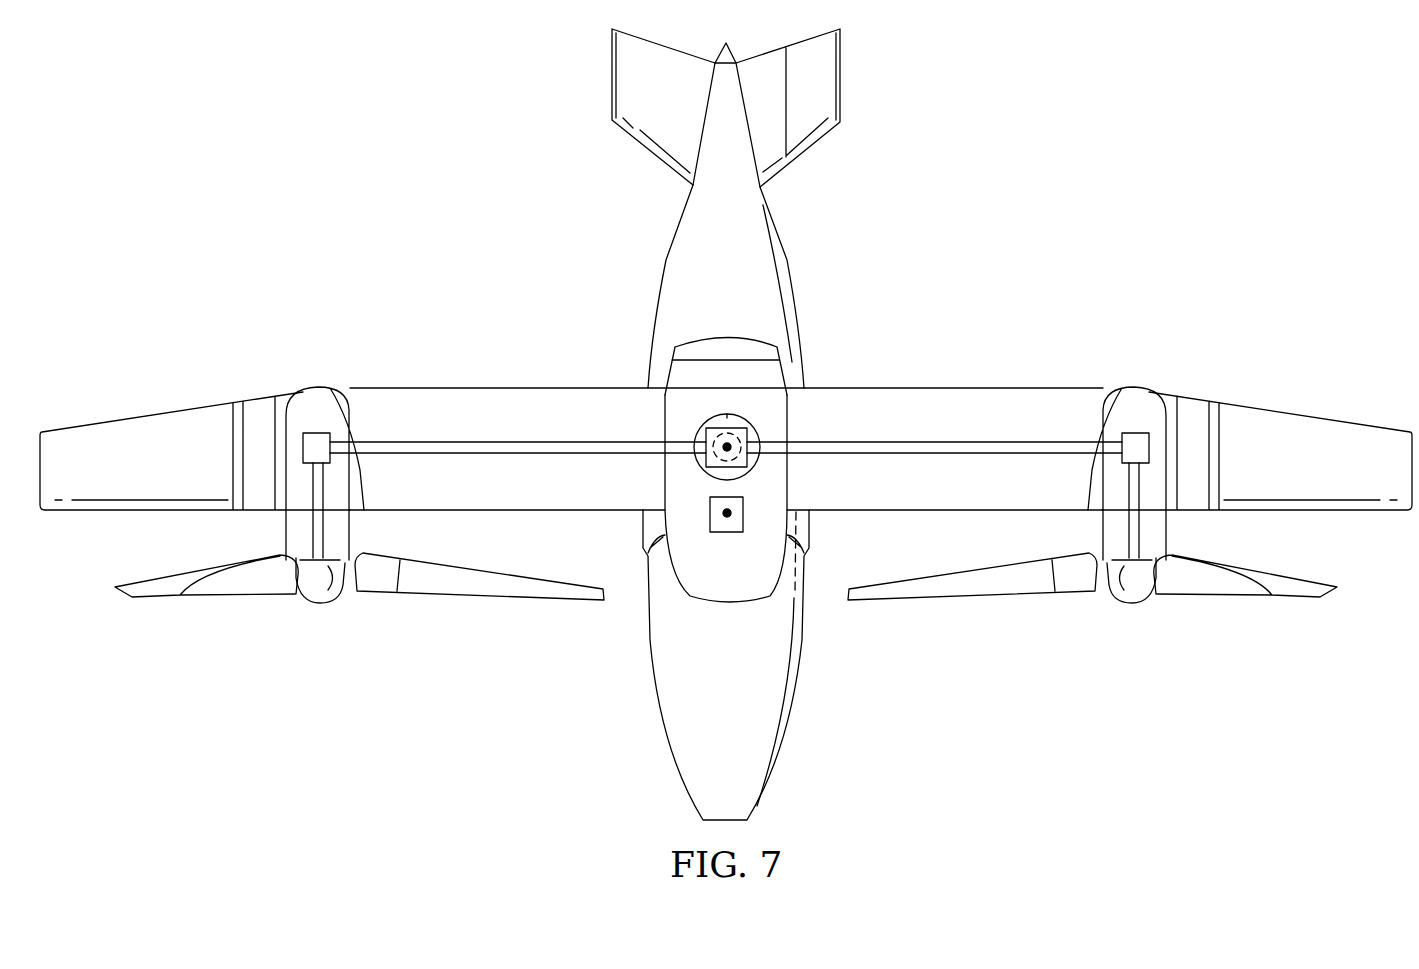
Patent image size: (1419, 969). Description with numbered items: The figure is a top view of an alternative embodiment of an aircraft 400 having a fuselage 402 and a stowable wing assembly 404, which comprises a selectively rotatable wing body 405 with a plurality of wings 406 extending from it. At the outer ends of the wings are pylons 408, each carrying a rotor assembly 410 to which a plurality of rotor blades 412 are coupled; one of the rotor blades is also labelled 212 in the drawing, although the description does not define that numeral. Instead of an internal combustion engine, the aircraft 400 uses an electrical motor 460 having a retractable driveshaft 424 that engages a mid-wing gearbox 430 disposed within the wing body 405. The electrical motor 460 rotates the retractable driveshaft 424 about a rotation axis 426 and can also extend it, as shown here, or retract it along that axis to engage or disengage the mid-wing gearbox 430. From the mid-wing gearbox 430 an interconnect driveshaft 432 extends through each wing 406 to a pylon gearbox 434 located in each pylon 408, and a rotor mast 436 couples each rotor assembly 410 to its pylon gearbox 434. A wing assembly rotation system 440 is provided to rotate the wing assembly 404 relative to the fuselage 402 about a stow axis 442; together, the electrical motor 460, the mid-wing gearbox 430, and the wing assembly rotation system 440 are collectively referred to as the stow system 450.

The aircraft 400 is at (1052, 84).
The fuselage 402 is at (652, 690).
The stowable wing assembly 404 is at (433, 381).
The selectively rotatable wing body 405 is at (685, 524).
The wing 406 is at (563, 388).
The pylon 408 is at (280, 525).
The rotor assembly 410 is at (308, 615).
The rotor blade 412 is at (155, 577).
The propeller blade 212 is at (473, 597).
The retractable driveshaft 424 is at (720, 434).
The rotation axis 426 is at (723, 460).
The mid-wing gearbox 430 is at (750, 462).
The interconnect driveshaft 432 is at (513, 457).
The pylon gearbox 434 is at (318, 433).
The rotor mast 436 is at (330, 545).
The wing assembly rotation system 440 is at (727, 523).
The stow axis 442 is at (727, 520).
The stow system 450 is at (772, 420).
The electrical motor 460 is at (727, 414).